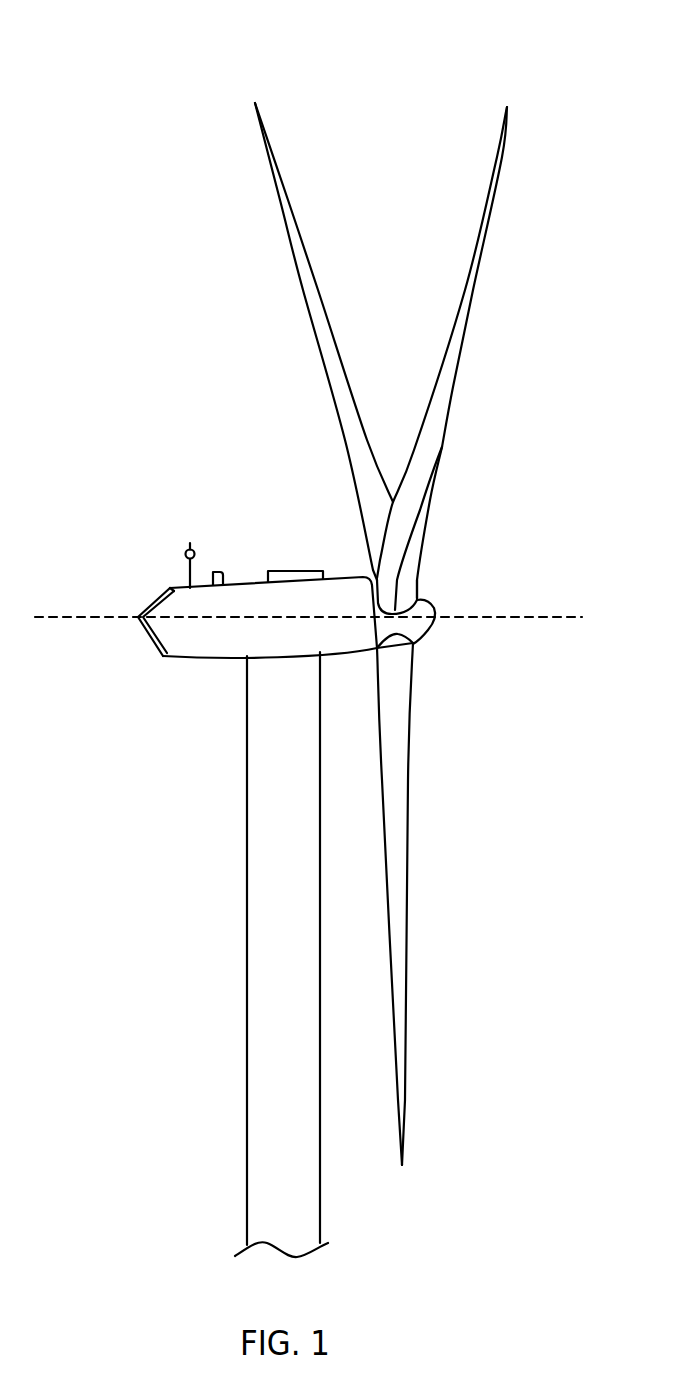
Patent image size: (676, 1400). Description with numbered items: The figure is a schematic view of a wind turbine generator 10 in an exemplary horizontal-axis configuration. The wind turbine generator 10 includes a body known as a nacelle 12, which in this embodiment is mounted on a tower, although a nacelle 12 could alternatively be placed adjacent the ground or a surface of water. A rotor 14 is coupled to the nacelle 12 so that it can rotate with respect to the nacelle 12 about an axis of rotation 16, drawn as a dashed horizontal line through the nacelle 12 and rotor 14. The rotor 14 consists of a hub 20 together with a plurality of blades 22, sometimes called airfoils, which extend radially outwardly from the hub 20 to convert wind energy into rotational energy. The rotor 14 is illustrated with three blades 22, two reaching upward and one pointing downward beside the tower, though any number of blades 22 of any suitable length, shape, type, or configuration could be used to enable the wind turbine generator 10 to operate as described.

The wind turbine generator 10 is at (308, 628).
The nacelle 12 is at (200, 667).
The rotor 14 is at (415, 660).
The axis of rotation 16 is at (503, 618).
The hub 20 is at (430, 627).
The blades 22 is at (290, 195).